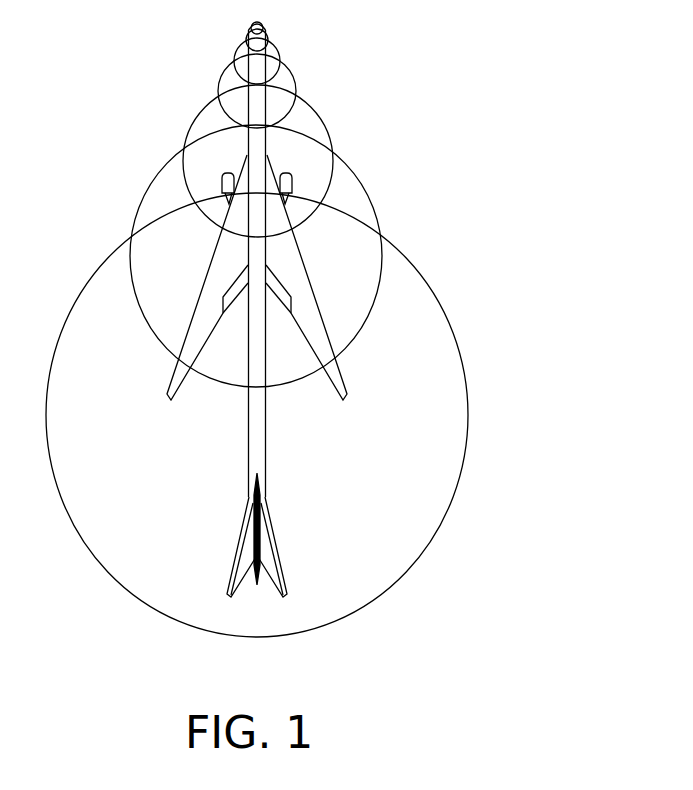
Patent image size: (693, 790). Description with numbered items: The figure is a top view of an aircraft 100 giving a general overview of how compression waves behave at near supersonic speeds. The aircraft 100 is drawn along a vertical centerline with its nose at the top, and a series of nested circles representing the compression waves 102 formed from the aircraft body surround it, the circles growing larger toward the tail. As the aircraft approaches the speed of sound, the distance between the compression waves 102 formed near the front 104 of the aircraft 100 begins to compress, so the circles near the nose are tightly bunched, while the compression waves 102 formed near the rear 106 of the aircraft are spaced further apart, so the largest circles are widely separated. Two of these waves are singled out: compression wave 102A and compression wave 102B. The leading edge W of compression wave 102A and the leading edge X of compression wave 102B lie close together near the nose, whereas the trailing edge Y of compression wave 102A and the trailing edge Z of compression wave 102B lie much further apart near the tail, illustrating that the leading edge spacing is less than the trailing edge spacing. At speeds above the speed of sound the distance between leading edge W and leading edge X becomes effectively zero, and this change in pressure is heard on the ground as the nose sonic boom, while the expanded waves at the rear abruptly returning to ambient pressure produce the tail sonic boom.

The aircraft 100 is at (267, 417).
The compression waves 102 is at (512, 216).
The compression wave 102A is at (360, 182).
The compression wave 102B is at (448, 318).
The front of the aircraft 104 is at (342, 33).
The rear of the aircraft 106 is at (379, 540).
The leading edge of compression wave 102A W is at (210, 113).
The leading edge of compression wave 102B X is at (201, 183).
The trailing edge of compression wave 102A Y is at (226, 374).
The trailing edge of compression wave 102B Z is at (246, 616).